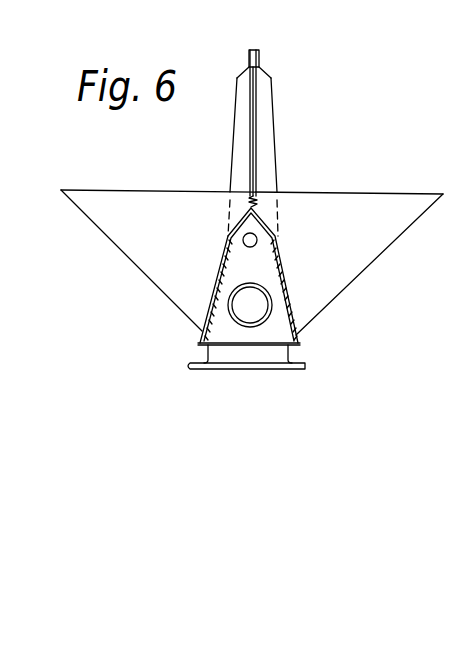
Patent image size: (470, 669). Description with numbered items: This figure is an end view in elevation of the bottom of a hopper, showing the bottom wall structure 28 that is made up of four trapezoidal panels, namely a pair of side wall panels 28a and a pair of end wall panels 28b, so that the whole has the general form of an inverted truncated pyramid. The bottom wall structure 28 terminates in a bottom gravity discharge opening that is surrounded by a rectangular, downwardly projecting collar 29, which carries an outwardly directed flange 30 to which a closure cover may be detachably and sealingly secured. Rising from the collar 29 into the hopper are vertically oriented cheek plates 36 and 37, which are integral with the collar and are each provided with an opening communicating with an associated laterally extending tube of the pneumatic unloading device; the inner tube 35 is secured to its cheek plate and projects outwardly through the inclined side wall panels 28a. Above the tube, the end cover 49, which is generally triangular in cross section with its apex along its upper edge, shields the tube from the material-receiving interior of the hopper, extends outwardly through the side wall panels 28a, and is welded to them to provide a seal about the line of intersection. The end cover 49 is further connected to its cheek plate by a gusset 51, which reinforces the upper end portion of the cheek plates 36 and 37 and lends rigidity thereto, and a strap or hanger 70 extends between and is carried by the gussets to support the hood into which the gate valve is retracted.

The bottom wall structure 28 is at (388, 194).
The side wall panels 28a is at (350, 257).
The end wall panels 28b is at (138, 268).
The cheek plate 36 is at (265, 100).
The gusset 51 is at (255, 125).
The strap or hanger 70 is at (259, 52).
The end cover 49 is at (217, 263).
The inner tube 35 is at (270, 293).
The cheek plate 37 is at (222, 330).
The collar 29 is at (262, 360).
The flange 30 is at (305, 367).